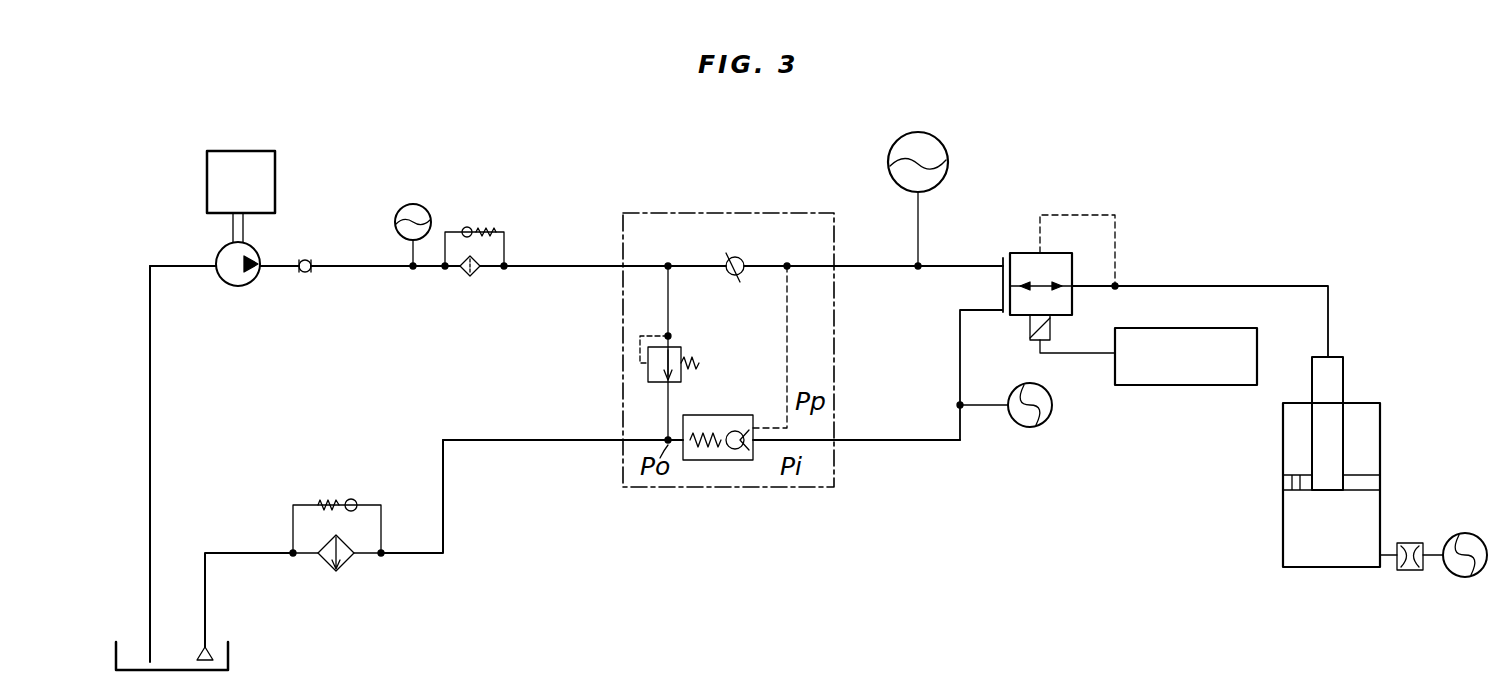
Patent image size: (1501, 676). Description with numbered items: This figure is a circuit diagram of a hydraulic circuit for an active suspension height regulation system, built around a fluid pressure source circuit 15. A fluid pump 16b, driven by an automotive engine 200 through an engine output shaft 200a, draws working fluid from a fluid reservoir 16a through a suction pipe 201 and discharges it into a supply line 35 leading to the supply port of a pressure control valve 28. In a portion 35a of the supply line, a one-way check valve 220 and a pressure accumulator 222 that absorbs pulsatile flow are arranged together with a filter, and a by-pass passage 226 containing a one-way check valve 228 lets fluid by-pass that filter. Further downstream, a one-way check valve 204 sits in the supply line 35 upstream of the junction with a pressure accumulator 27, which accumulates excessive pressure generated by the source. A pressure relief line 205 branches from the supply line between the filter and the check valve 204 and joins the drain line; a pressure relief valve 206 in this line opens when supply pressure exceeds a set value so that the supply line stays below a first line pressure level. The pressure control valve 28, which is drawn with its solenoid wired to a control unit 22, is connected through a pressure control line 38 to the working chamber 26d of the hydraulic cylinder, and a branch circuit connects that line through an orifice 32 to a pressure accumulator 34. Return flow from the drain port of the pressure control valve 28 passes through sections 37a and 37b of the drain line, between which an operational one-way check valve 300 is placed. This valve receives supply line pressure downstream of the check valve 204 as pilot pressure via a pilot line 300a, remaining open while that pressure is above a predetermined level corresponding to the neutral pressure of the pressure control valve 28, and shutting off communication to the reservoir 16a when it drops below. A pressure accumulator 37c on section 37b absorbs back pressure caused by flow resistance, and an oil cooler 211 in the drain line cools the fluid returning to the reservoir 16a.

The fluid pressure source circuit 15 is at (463, 486).
The fluid reservoir 16a is at (228, 660).
The pressure unit 16b is at (256, 252).
The control unit 22 is at (1257, 347).
The working chamber 26d is at (1283, 525).
The pressure accumulator 27 is at (948, 157).
The pressure control valve 28 is at (1020, 253).
The orifice 32 is at (1412, 575).
The pressure accumulator 34 is at (1468, 578).
The supply line 35 is at (852, 260).
The portion of the supply line 35a is at (390, 270).
The section of the drain line 37a is at (540, 441).
The section of the drain line 37b is at (875, 440).
The pressure accumulator 37c is at (1048, 425).
The pressure control line 38 is at (1220, 288).
The automotive engine 200 is at (244, 151).
The engine output shaft 200a is at (232, 218).
The suction pipe 201 is at (150, 410).
The one-way check valve 204 is at (730, 258).
The pressure relief line 205 is at (668, 303).
The pressure relief valve 206 is at (681, 350).
The oil cooler 211 is at (336, 572).
The one-way check valve 220 is at (308, 258).
The pressure accumulator 222 is at (398, 207).
The by-pass passage 226 is at (504, 245).
The one-way check valve 228 is at (466, 227).
The operational one-way check valve 300 is at (732, 415).
The pilot line 300a is at (787, 344).